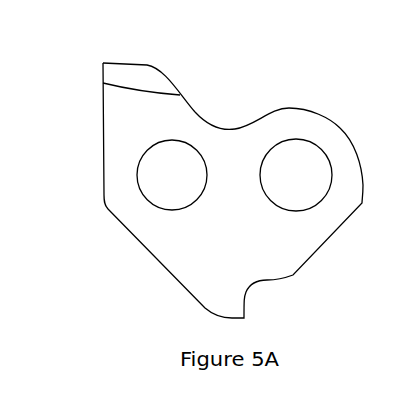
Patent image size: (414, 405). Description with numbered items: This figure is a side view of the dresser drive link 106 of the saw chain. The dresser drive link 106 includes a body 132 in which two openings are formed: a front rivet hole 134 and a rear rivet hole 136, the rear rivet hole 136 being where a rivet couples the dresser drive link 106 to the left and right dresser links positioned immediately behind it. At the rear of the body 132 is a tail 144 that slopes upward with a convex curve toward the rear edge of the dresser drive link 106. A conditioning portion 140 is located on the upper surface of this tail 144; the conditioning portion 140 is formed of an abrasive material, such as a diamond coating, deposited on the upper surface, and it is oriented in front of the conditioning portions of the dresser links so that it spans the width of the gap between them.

The dresser drive link 106 is at (64, 72).
The body 132 is at (234, 198).
The front rivet hole 134 is at (335, 154).
The rear rivet hole 136 is at (126, 201).
The conditioning portion 140 is at (152, 62).
The tail 144 is at (179, 70).